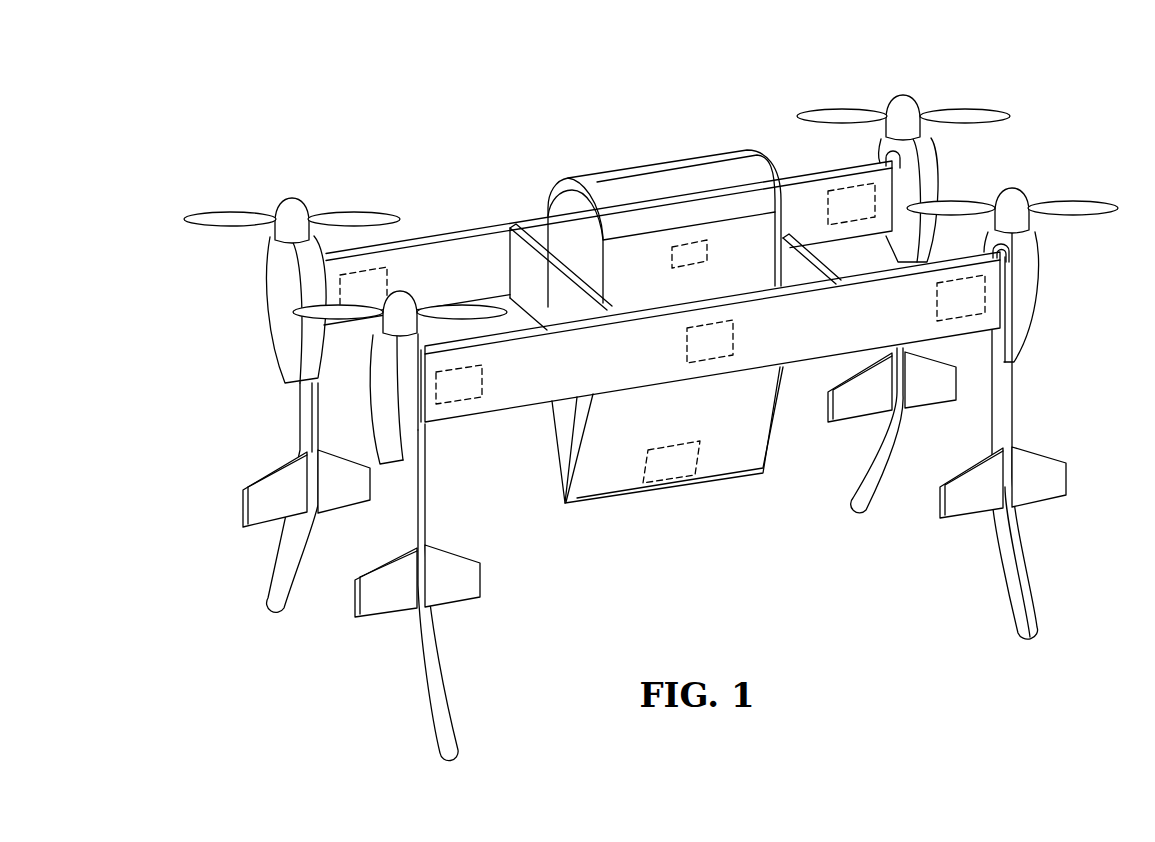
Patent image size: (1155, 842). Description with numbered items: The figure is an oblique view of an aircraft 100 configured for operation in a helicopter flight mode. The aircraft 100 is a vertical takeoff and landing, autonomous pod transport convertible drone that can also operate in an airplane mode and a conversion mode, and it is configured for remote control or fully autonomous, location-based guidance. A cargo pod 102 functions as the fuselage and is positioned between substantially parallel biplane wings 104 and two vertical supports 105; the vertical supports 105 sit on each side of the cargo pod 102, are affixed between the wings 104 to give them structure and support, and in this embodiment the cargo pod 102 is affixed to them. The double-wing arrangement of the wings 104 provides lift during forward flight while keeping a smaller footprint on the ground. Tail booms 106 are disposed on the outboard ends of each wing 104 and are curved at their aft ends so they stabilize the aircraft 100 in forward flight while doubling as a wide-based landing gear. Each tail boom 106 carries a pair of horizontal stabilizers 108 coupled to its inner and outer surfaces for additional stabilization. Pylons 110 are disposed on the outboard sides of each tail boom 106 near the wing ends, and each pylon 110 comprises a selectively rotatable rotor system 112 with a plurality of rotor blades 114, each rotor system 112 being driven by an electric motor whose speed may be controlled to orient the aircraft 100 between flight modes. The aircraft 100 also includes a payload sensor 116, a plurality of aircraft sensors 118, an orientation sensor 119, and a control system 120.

The aircraft 100 is at (512, 82).
The cargo pod 102 is at (645, 165).
The biplane wings 104 is at (513, 220).
The vertical supports 105 is at (577, 312).
The tail booms 106 is at (282, 587).
The horizontal stabilizers 108 is at (258, 508).
The pylons 110 is at (275, 305).
The rotor system 112 is at (290, 193).
The rotor blades 114 is at (228, 210).
The payload sensor 116 is at (690, 243).
The aircraft sensors 118 is at (340, 288).
The orientation sensor 119 is at (735, 340).
The control system 120 is at (662, 488).